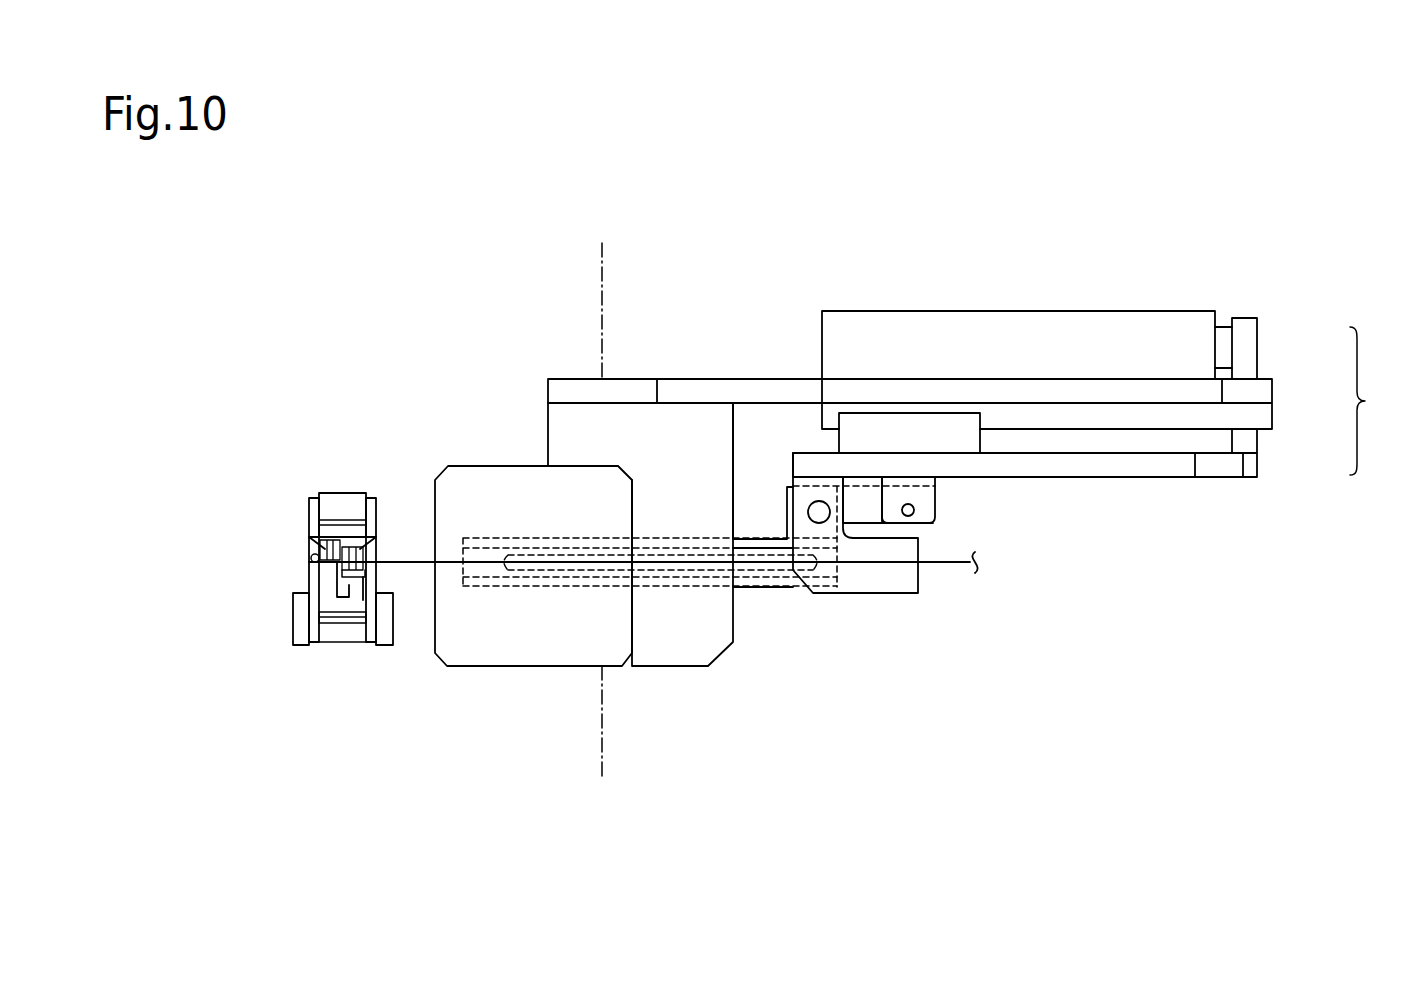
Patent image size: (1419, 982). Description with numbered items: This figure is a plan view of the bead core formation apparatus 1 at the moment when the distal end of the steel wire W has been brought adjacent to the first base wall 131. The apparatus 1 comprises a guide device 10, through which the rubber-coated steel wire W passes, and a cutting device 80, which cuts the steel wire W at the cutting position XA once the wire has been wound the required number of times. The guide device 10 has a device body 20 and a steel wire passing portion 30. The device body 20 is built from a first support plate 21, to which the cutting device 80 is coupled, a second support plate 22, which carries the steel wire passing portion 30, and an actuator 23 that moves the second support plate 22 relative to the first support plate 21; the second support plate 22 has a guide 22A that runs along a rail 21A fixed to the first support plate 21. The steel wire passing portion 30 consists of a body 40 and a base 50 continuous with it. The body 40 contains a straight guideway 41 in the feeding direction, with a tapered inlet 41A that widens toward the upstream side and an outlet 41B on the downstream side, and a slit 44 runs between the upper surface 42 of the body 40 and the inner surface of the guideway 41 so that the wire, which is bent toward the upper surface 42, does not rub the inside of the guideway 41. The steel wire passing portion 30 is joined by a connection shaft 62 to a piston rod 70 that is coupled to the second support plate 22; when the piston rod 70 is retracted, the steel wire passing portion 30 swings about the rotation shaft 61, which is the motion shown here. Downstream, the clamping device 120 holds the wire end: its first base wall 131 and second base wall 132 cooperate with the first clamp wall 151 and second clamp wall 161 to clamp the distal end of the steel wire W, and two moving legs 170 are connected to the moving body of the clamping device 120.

The bead core formation apparatus 1 is at (1246, 263).
The guide device 10 is at (1047, 600).
The device body 20 is at (1372, 401).
The first support plate 21 is at (1263, 392).
The rail 21A is at (1082, 413).
The second support plate 22 is at (1253, 463).
The guide 22A is at (963, 420).
The actuator 23 is at (1203, 350).
The steel wire passing portion 30 is at (758, 539).
The body 40 is at (677, 540).
The guideway 41 is at (767, 588).
The inlet 41A is at (842, 573).
The outlet 41B is at (462, 584).
The upper surface 42 is at (675, 581).
The slit 44 is at (602, 558).
The base 50 is at (867, 478).
The rotation shaft 61 is at (817, 501).
The connection shaft 62 is at (911, 516).
The piston rod 70 is at (930, 499).
The cutting device 80 is at (535, 667).
The clamping device 120 is at (340, 493).
The first base wall 131 is at (311, 558).
The second base wall 132 is at (360, 598).
The first clamp wall 151 is at (313, 541).
The second clamp wall 161 is at (376, 558).
The moving legs 170 is at (298, 632).
The steel wire W is at (568, 564).
The cutting position XA is at (602, 495).